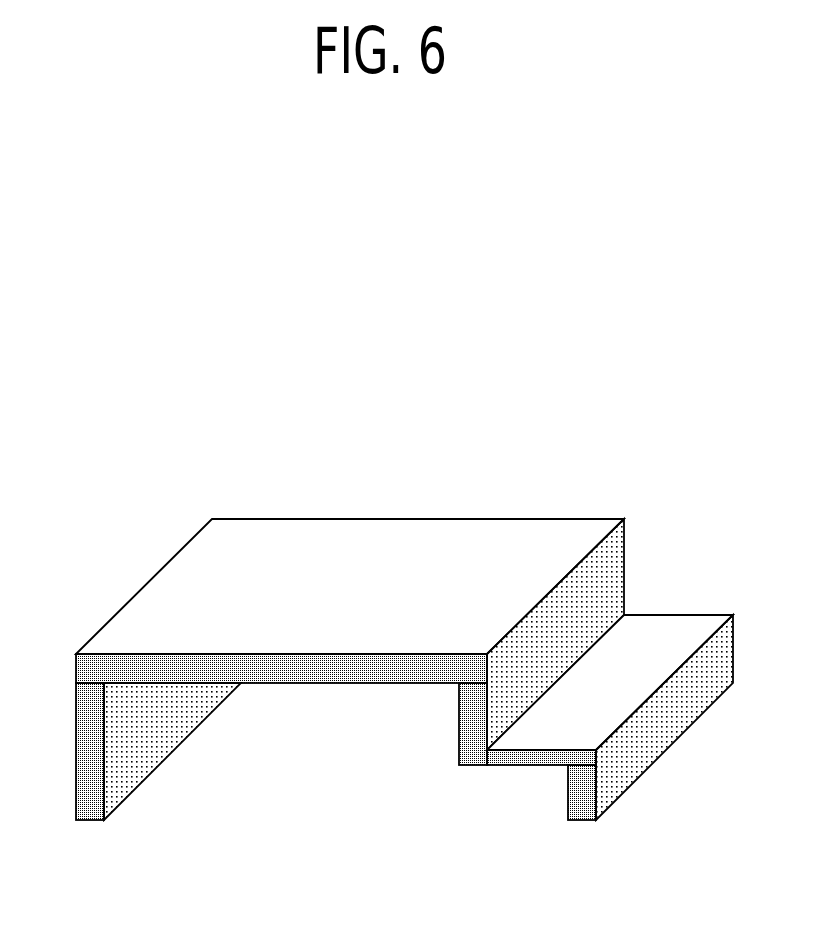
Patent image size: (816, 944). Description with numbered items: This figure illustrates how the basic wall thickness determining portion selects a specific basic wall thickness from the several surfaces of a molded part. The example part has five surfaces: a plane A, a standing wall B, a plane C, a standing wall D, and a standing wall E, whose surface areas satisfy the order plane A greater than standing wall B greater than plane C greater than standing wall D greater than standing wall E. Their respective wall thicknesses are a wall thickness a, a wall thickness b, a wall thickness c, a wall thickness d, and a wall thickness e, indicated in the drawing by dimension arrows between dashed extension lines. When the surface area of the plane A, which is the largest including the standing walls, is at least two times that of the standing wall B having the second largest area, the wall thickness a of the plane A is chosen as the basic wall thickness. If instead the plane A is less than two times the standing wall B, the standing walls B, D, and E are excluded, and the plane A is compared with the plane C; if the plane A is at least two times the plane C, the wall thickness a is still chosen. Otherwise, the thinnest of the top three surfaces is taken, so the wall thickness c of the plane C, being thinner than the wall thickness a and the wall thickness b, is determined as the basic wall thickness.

The plane A is at (336, 595).
The standing wall B is at (136, 730).
The plane C is at (636, 677).
The standing wall D is at (569, 643).
The standing wall E is at (678, 728).
The wall thickness a is at (318, 654).
The wall thickness b is at (76, 820).
The wall thickness c is at (549, 751).
The wall thickness d is at (487, 765).
The wall thickness e is at (543, 878).